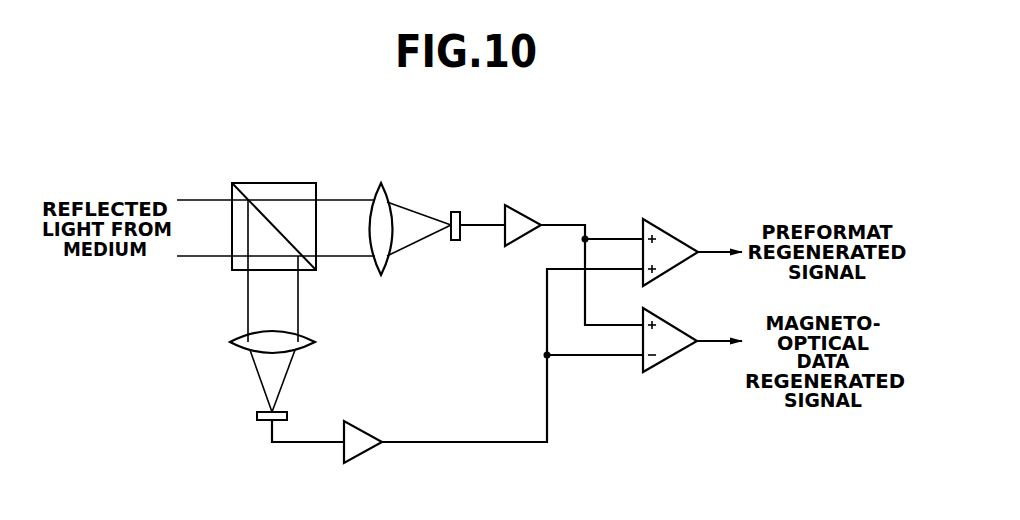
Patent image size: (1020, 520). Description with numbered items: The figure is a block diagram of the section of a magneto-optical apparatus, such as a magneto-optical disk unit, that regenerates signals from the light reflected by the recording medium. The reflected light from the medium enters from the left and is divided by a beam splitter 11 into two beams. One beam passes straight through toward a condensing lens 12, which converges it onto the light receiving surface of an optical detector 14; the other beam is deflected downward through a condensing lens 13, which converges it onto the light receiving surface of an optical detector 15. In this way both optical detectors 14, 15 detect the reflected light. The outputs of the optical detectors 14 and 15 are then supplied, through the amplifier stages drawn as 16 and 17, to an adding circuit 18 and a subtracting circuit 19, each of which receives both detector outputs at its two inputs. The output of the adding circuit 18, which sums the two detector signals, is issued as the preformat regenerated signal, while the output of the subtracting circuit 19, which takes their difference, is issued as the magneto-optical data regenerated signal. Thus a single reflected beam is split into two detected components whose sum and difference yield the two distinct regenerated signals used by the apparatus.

The beam splitter 11 is at (286, 183).
The condensing lens 12 is at (385, 185).
The condensing lens 13 is at (302, 333).
The optical detector 14 is at (454, 212).
The optical detector 15 is at (283, 411).
The amplifier 16 is at (521, 204).
The amplifier 17 is at (363, 423).
The adding circuit 18 is at (670, 233).
The subtracting circuit 19 is at (672, 361).